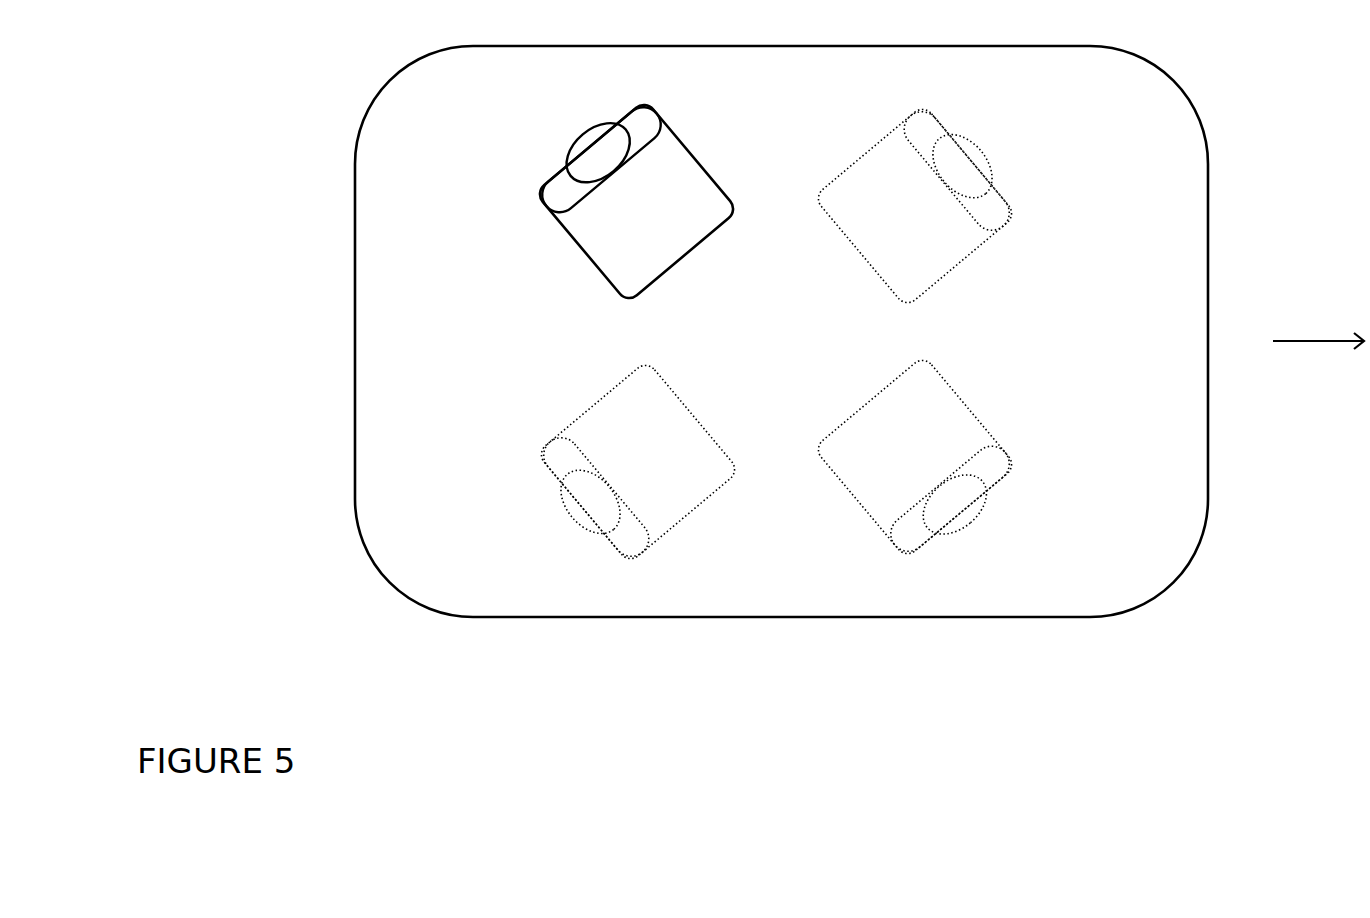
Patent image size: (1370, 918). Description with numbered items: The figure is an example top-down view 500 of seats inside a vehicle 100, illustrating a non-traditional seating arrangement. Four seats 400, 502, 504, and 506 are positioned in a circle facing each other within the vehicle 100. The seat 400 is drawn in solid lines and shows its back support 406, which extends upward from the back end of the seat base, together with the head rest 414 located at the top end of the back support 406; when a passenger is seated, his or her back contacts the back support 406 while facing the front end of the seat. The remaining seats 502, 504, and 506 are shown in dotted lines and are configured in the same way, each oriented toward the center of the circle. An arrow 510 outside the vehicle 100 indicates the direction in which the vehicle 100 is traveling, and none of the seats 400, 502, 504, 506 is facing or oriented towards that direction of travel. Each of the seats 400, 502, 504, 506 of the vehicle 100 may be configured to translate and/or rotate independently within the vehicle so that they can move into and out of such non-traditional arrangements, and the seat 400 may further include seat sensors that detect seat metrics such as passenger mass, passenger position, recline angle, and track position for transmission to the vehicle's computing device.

The vehicle 100 is at (517, 617).
The seat 400 is at (666, 227).
The back support 406 is at (549, 182).
The head rest 414 is at (587, 141).
The seat 502 is at (664, 475).
The seat 504 is at (929, 227).
The seat 506 is at (929, 460).
The arrow 510 is at (1327, 341).
The top-down view 500 is at (234, 733).